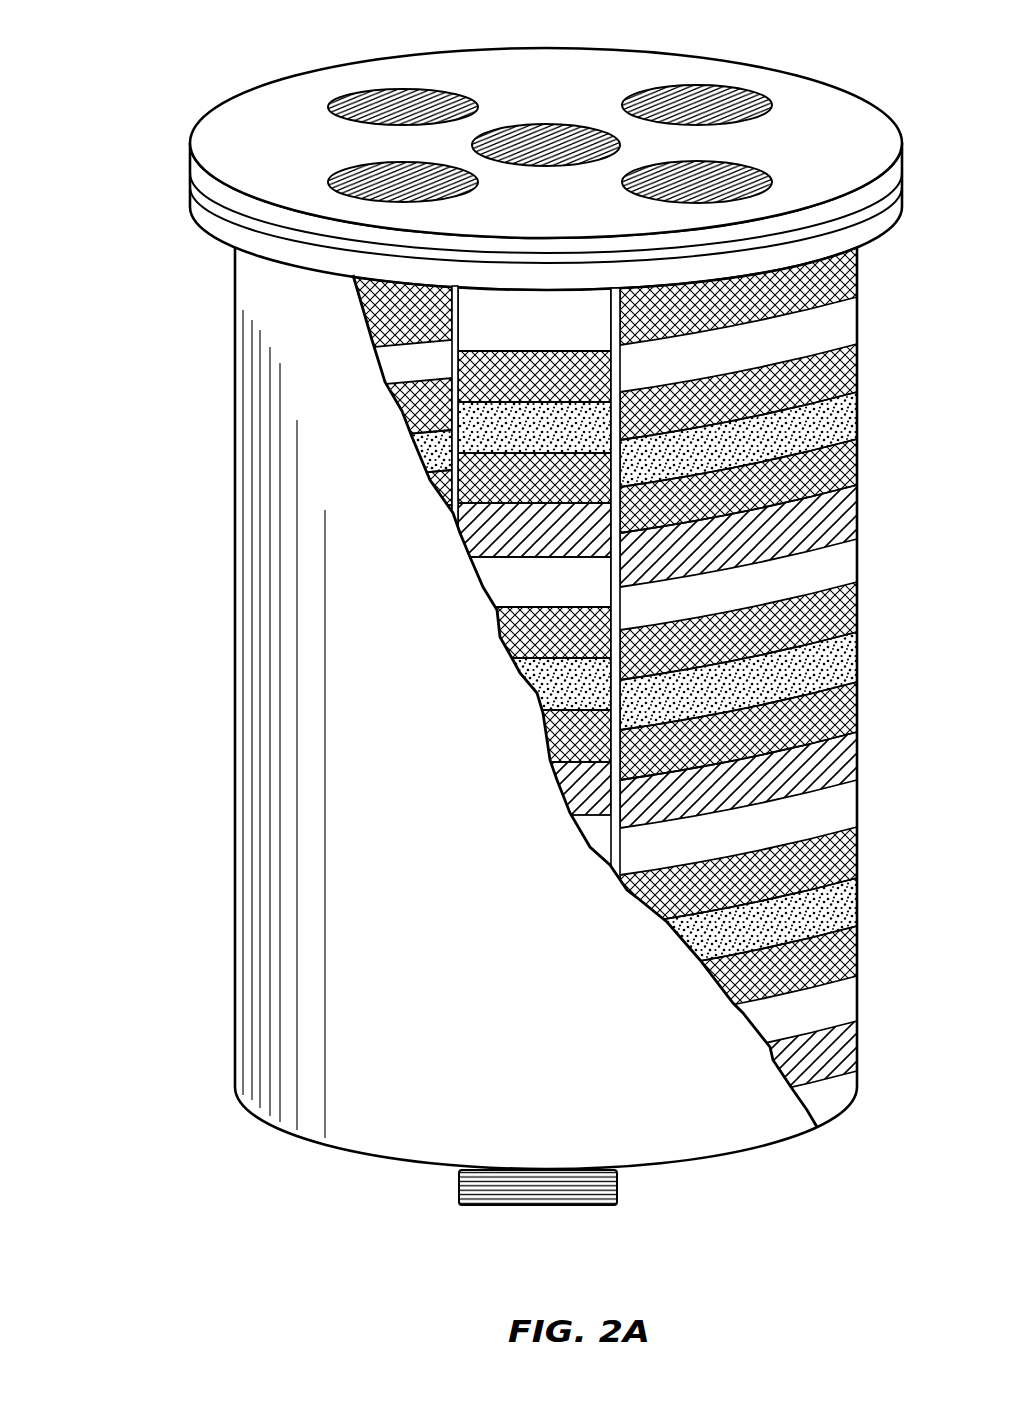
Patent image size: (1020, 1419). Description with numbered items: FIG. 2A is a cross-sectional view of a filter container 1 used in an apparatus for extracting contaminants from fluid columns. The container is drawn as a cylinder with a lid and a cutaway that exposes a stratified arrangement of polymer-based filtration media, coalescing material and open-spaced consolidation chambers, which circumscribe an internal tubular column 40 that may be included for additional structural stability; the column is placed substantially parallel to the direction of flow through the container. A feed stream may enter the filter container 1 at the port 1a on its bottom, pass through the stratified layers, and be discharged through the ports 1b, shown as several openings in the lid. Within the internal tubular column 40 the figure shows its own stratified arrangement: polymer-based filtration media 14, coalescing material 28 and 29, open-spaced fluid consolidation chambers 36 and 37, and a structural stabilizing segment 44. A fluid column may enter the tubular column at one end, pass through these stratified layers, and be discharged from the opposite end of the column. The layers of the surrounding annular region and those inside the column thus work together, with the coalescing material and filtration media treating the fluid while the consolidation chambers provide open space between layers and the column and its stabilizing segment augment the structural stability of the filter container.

The filter container 1 is at (157, 97).
The port 1a is at (458, 1198).
The ports 1b is at (337, 183).
The internal tubular column 40 is at (452, 303).
The open-spaced fluid consolidation chamber 37 is at (480, 333).
The coalescing material 29 is at (480, 377).
The polymer-based filtration media 14 is at (480, 427).
The coalescing material 28 is at (480, 472).
The structural stabilizing segment 44 is at (480, 528).
The open-spaced fluid consolidation chamber 36 is at (510, 577).